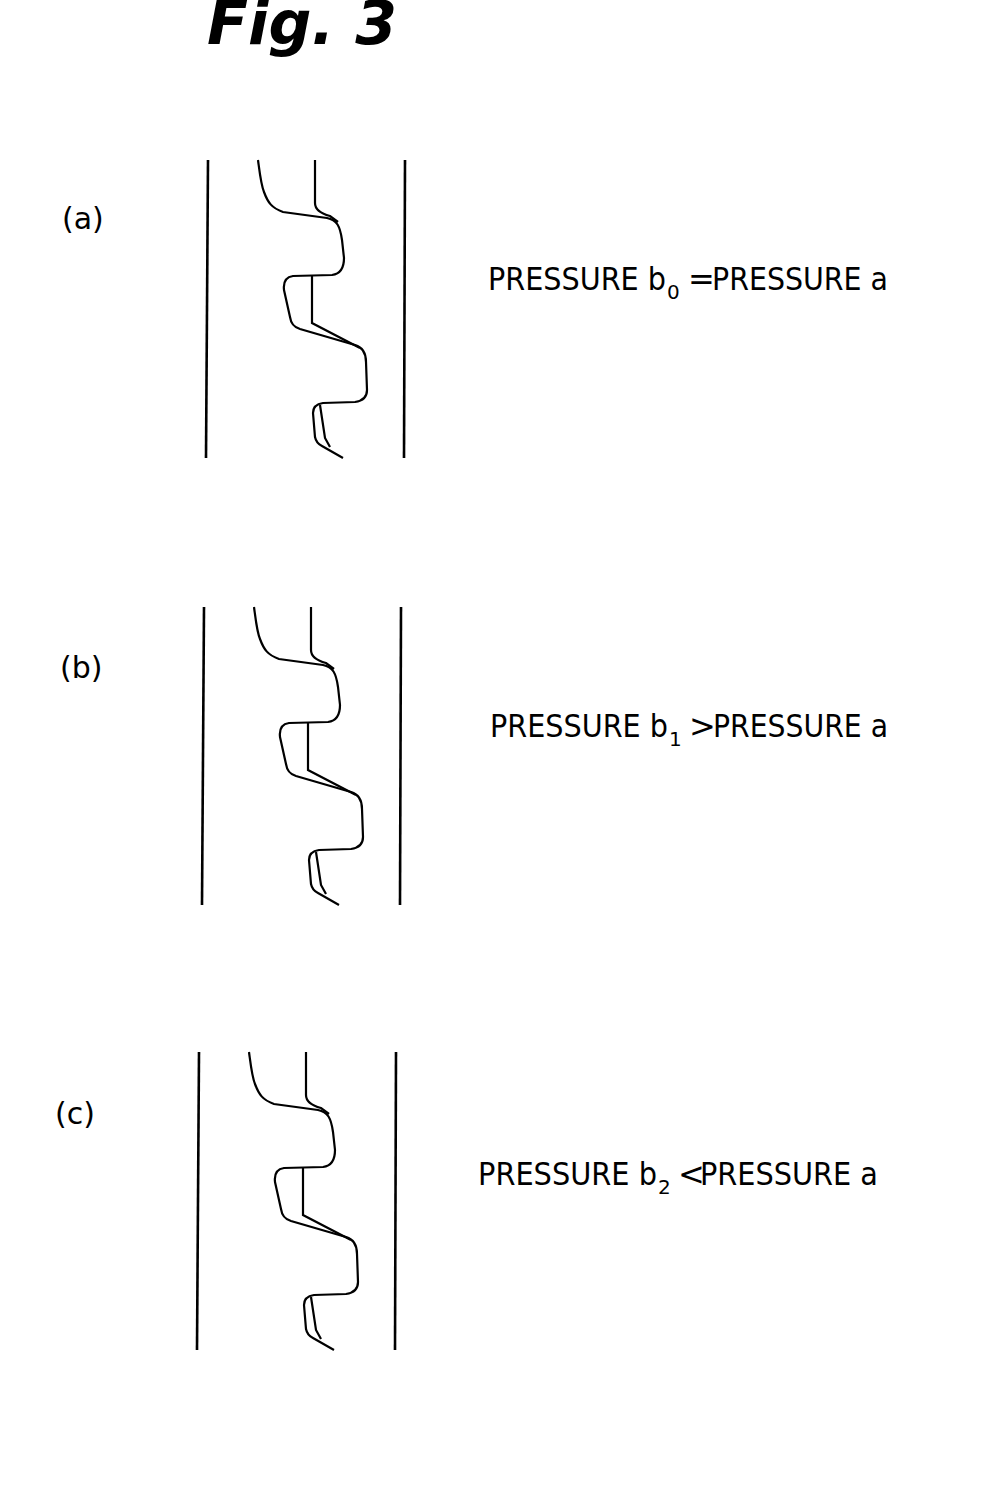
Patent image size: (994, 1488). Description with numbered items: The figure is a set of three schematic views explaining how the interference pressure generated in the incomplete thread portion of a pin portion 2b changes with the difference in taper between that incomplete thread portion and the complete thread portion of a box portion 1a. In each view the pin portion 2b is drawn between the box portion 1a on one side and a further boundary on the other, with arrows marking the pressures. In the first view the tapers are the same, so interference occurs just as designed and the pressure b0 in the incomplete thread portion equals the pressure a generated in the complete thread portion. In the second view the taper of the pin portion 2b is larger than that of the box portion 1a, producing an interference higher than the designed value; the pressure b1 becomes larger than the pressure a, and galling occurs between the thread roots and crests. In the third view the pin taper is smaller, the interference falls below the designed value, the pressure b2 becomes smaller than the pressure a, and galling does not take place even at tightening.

The box portion 1a is at (228, 333).
The pin portion 2b is at (385, 278).
The pressure b0 is at (382, 235).
The pressure b1 is at (318, 684).
The pressure b2 is at (313, 1129).
The pressure a is at (402, 355).